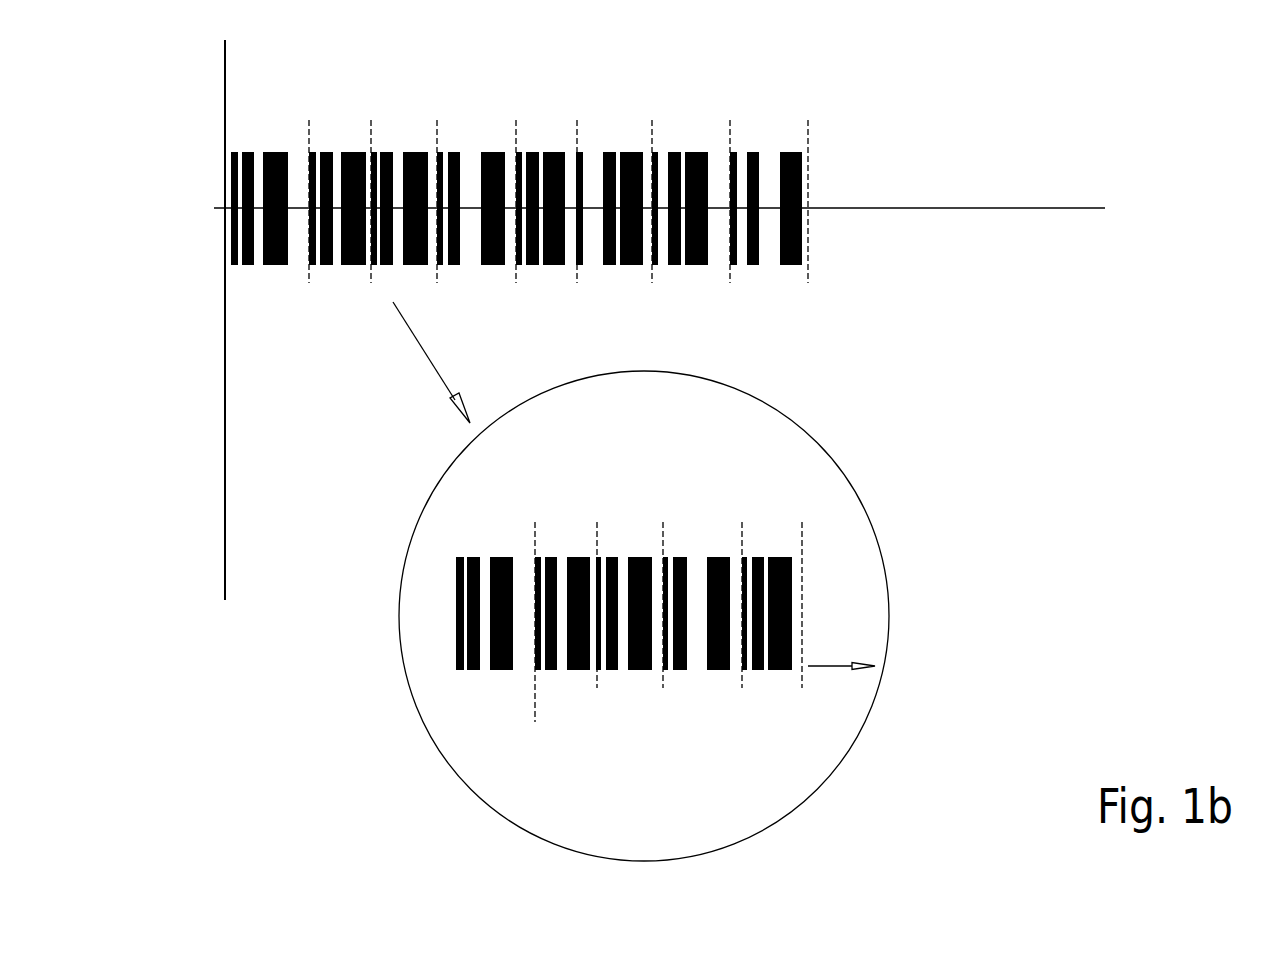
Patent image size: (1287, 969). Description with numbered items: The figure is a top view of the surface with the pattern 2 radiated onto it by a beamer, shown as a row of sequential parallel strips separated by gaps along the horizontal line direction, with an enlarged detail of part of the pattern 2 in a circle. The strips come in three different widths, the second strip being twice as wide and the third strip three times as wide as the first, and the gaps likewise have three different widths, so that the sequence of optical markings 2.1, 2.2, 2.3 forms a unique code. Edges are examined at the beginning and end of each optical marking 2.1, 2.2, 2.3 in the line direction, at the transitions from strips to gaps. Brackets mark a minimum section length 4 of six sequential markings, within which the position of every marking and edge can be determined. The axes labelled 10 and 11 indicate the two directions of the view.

The pattern 2 is at (607, 100).
The minimum section length 4 is at (519, 433).
The x axis / first direction 10 is at (218, 360).
The y axis / second direction 11 is at (1028, 260).
The optical marking 2.1 is at (465, 585).
The optical marking 2.2 is at (451, 613).
The optical marking 2.3 is at (470, 638).